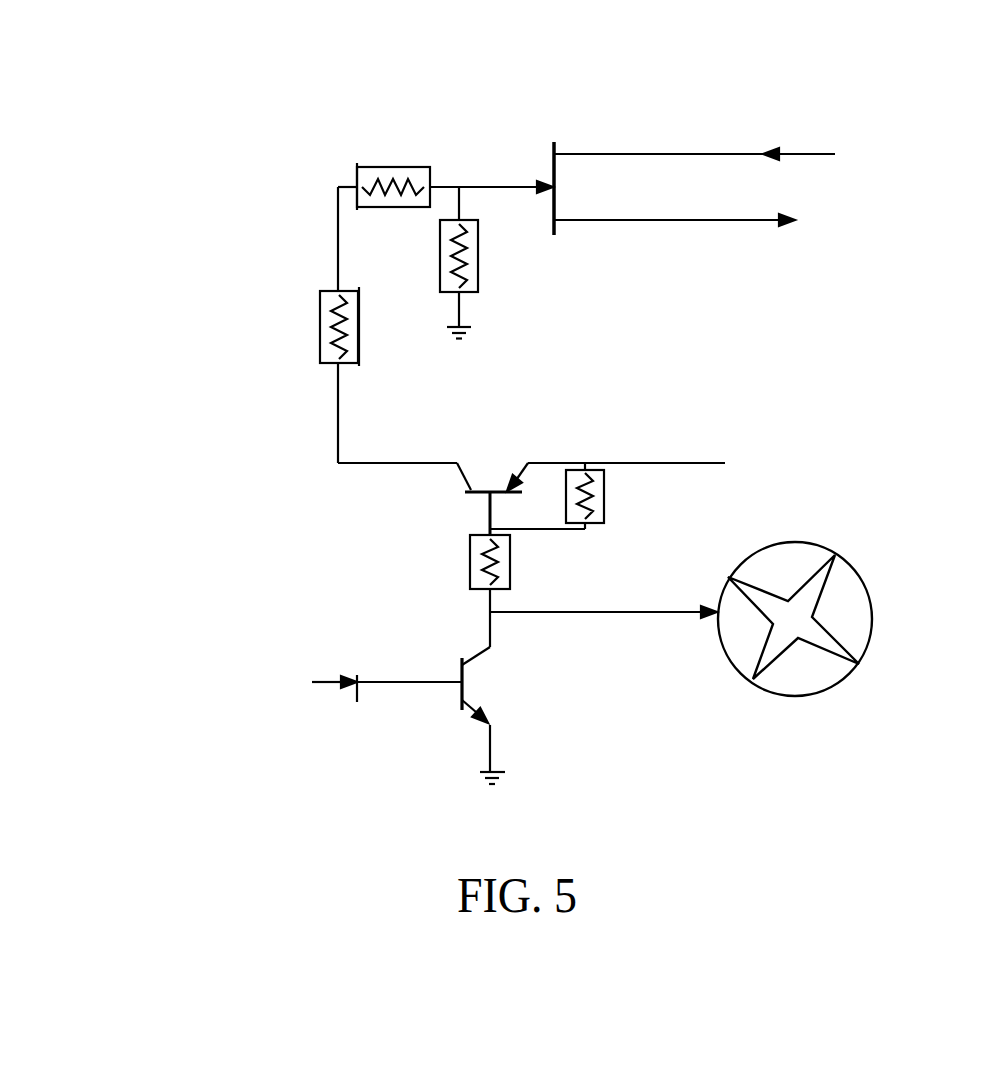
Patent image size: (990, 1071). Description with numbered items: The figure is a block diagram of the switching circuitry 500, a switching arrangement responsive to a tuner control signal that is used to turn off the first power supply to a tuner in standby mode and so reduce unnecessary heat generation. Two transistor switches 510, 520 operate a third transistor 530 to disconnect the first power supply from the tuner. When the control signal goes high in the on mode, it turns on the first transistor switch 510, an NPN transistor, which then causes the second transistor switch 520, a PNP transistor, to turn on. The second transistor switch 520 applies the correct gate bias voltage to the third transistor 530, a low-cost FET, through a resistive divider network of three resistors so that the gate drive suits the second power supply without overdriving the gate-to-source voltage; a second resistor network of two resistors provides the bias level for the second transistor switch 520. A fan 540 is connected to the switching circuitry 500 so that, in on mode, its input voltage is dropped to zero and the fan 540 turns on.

The switching circuitry 500 is at (550, 42).
The first transistor switch 510 is at (495, 692).
The second transistor switch 520 is at (510, 441).
The third transistor 530 is at (586, 130).
The fan 540 is at (871, 574).